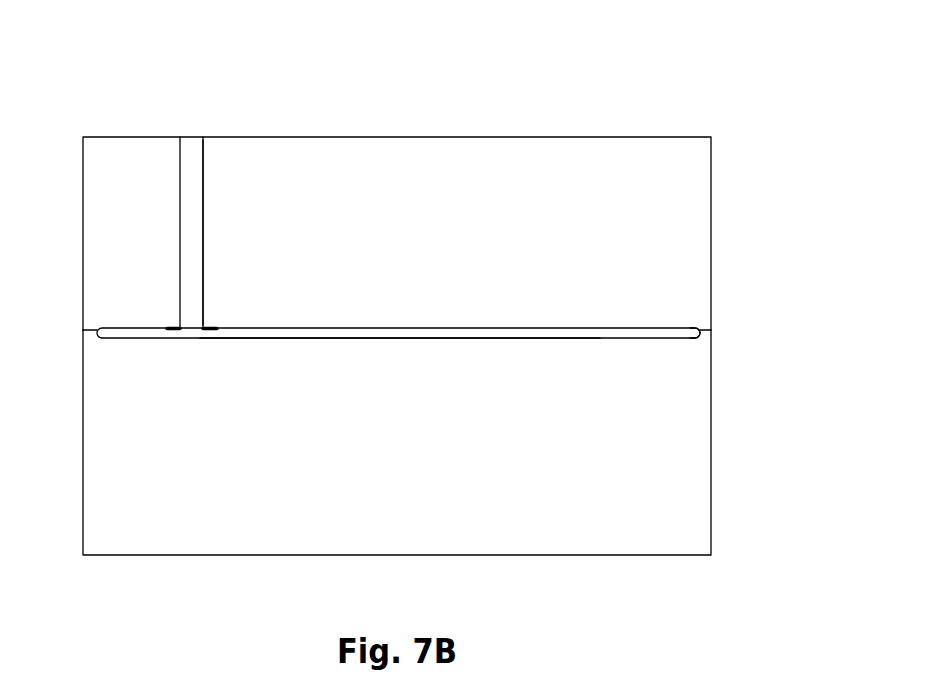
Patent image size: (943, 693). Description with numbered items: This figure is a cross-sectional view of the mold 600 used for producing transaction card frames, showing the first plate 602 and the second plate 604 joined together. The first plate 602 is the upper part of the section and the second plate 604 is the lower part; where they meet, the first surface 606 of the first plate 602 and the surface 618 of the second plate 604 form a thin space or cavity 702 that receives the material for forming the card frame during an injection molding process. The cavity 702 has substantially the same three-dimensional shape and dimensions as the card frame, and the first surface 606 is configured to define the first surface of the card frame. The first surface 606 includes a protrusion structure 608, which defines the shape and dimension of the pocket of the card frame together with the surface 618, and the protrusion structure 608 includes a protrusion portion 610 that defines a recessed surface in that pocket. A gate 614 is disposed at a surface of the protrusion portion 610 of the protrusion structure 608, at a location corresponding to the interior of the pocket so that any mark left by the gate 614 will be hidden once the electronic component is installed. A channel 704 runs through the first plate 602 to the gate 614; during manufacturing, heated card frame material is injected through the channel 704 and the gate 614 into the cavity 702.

The mold 600 is at (108, 86).
The first plate 602 is at (711, 208).
The second plate 604 is at (711, 428).
The first surface 606 is at (437, 328).
The protrusion structure 608 is at (206, 295).
The protrusion portion 610 is at (177, 327).
The gate 614 is at (208, 328).
The surface 618 is at (462, 338).
The cavity 702 is at (662, 333).
The channel 704 is at (203, 218).